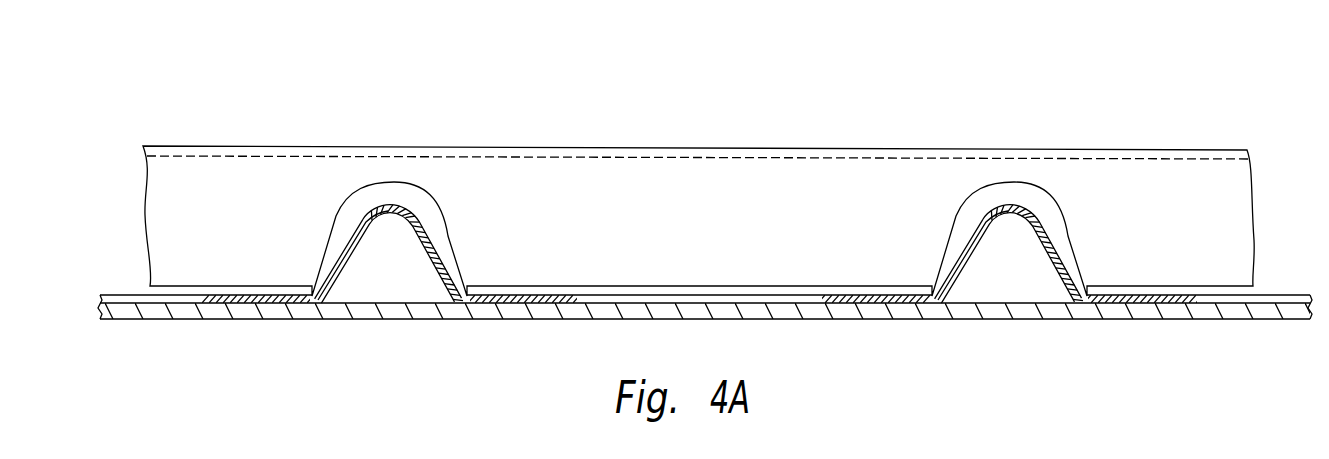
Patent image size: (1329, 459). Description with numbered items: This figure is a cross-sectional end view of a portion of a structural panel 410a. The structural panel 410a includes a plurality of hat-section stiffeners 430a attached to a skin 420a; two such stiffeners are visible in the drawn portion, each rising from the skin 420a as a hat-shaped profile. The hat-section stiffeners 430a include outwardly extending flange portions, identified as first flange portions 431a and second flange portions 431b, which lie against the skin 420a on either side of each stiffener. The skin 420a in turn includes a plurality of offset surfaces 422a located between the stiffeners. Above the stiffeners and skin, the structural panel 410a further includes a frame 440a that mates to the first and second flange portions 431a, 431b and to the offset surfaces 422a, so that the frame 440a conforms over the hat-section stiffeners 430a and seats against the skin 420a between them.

The structural panel 410a is at (1081, 98).
The frame 440a is at (1198, 150).
The hat-section stiffeners 430a is at (425, 263).
The first flange portions 431a is at (268, 294).
The second flange portions 431b is at (512, 296).
The offset surfaces 422a is at (707, 295).
The skin 420a is at (862, 320).